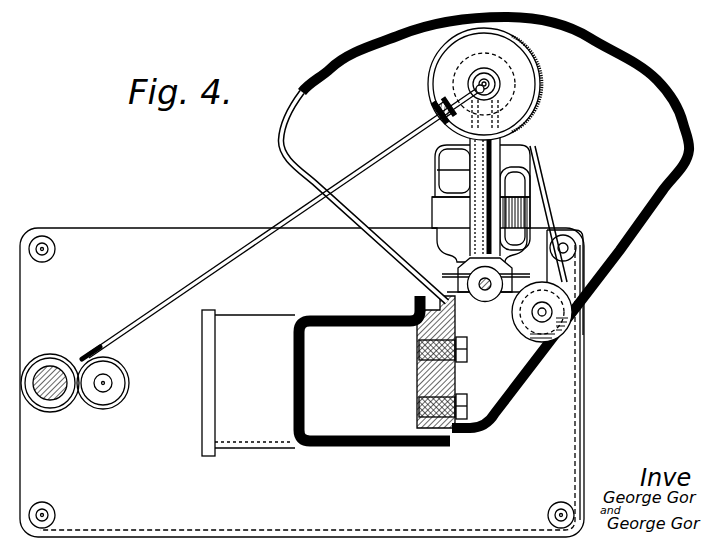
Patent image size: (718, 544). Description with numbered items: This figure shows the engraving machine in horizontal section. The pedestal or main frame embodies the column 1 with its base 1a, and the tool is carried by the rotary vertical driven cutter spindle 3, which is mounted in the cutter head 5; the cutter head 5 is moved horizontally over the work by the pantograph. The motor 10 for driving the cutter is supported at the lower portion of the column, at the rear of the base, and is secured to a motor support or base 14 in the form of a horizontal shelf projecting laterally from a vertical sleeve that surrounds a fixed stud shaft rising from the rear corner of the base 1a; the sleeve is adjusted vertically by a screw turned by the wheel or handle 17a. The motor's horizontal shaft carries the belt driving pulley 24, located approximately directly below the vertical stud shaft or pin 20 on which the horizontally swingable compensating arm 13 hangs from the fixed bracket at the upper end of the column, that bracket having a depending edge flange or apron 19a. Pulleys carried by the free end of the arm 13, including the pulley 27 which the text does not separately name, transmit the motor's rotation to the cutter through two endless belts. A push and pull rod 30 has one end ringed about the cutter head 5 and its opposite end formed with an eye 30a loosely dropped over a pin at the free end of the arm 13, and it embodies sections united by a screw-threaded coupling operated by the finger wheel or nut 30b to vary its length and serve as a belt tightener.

The column 1 is at (383, 368).
The base 1a is at (582, 373).
The cutter spindle 3 is at (62, 400).
The cutter head 5 is at (52, 358).
The motor 10 is at (440, 210).
The compensating arm 13 is at (490, 182).
The motor support or base 14 is at (548, 211).
The wheel or handle 17a is at (526, 322).
The depending edge flange or apron 19a is at (665, 212).
The vertical stud shaft or pin 20 is at (486, 292).
The belt driving pulley 24 is at (442, 274).
The drive pulley 27 is at (531, 70).
The push and pull rod 30 is at (292, 215).
The eye 30a is at (482, 82).
The finger wheel or nut 30b is at (437, 107).